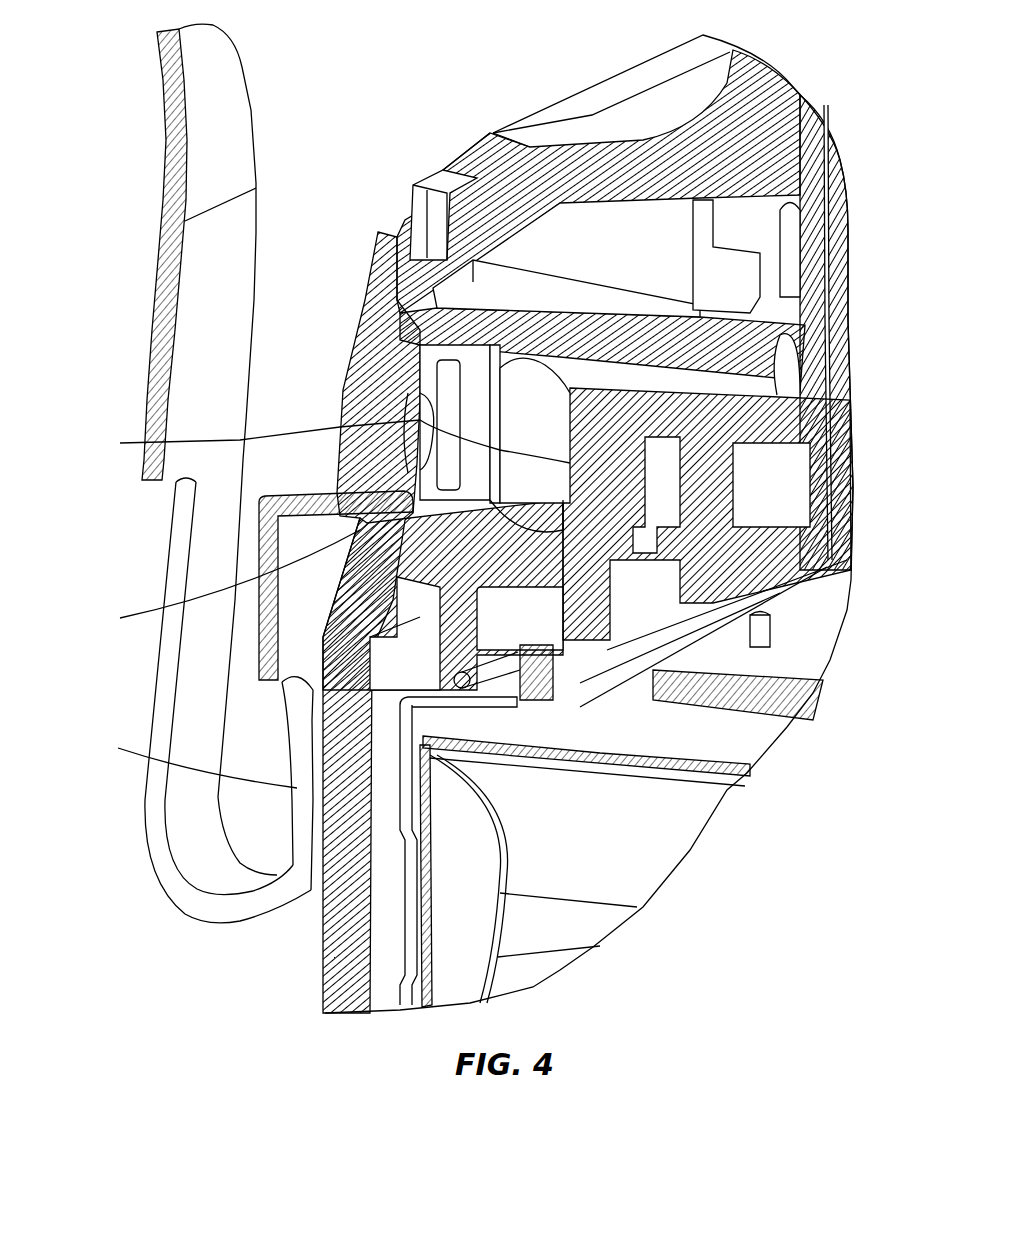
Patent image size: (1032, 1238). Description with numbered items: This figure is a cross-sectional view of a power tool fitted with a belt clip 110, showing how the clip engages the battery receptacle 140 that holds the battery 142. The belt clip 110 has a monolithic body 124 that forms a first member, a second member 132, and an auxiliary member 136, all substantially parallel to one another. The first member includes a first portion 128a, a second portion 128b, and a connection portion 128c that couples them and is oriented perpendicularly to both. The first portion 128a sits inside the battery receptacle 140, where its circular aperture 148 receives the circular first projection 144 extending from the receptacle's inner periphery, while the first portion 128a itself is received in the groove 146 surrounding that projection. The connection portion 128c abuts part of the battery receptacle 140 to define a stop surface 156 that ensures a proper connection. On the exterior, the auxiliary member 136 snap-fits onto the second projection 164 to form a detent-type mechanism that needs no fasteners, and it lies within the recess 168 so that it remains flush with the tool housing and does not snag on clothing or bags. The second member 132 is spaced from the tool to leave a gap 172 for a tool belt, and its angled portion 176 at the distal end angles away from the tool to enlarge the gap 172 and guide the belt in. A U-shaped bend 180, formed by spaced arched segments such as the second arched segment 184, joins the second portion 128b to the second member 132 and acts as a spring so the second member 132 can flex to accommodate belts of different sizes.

The belt clip 110 is at (85, 220).
The body 124 is at (108, 882).
The first portion 128a is at (321, 441).
The second portion 128b is at (179, 762).
The connection portion 128c is at (217, 581).
The second member 132 is at (153, 378).
The auxiliary member 136 is at (377, 240).
The battery receptacle 140 is at (523, 183).
The battery 142 is at (770, 410).
The first projection 144 is at (800, 580).
The groove 146 is at (417, 368).
The aperture 148 is at (425, 395).
The stop surface 156 is at (320, 488).
The second projection 164 is at (357, 343).
The recess 168 is at (477, 263).
The gap 172 is at (350, 100).
The angled portion 176 is at (163, 118).
The bend 180 is at (243, 892).
The second arched segment 184 is at (205, 906).